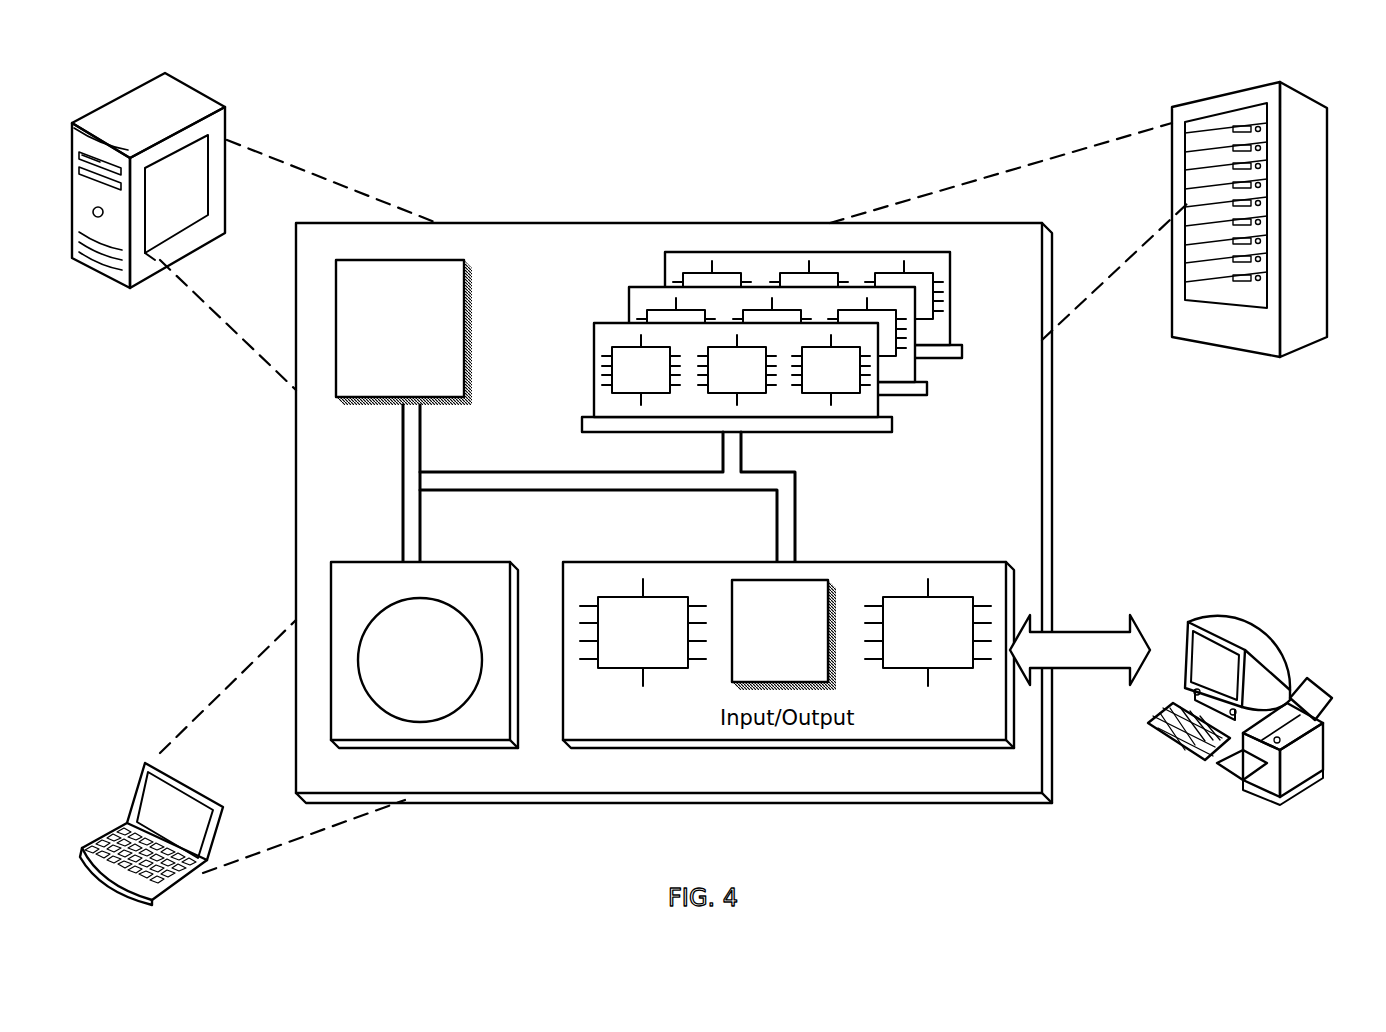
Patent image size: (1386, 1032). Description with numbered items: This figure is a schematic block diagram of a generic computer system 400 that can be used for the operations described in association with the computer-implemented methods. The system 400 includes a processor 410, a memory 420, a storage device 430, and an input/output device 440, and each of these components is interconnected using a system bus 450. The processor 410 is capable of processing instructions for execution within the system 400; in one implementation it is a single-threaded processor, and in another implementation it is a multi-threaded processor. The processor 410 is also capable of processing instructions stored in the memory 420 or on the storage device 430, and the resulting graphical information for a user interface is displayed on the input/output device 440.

The generic computer system 400 is at (489, 94).
The processor 410 is at (404, 332).
The memory 420 is at (959, 396).
The storage device 430 is at (424, 655).
The input/output device 440 is at (1180, 621).
The system bus 450 is at (596, 492).